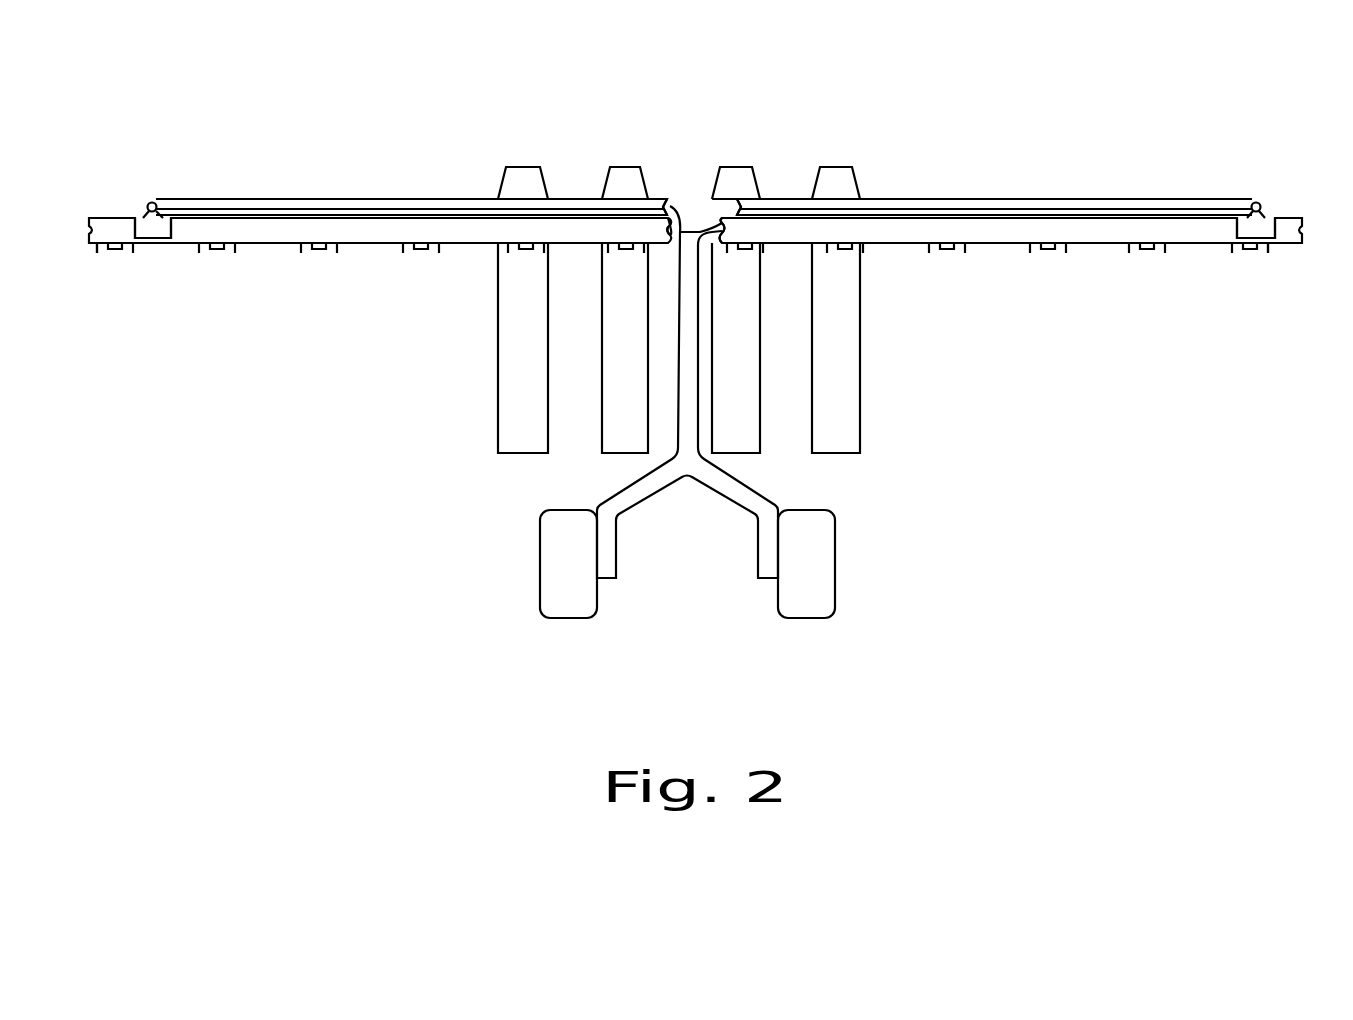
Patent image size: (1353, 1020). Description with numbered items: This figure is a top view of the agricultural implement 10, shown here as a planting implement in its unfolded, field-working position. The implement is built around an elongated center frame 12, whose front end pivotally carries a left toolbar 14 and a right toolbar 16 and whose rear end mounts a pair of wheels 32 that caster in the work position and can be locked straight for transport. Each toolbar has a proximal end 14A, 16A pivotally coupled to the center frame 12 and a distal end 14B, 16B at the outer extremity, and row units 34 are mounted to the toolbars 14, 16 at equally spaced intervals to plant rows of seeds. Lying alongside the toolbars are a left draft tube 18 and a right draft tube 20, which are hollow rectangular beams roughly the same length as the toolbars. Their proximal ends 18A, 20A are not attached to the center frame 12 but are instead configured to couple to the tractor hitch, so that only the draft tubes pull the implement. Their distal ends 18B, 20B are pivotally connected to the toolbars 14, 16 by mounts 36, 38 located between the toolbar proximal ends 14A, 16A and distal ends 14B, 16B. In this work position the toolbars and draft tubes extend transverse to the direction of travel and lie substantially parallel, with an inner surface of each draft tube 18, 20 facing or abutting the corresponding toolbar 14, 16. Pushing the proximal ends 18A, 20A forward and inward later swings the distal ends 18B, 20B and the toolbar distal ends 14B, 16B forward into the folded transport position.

The agricultural implement 10 is at (438, 472).
The center frame 12 is at (685, 403).
The left toolbar 14 is at (263, 235).
The proximal end of left toolbar 14A is at (658, 265).
The distal end of left toolbar 14B is at (105, 272).
The right toolbar 16 is at (1202, 236).
The proximal end of right toolbar 16A is at (735, 272).
The distal end of right toolbar 16B is at (1280, 271).
The left draft tube 18 is at (268, 203).
The proximal end of left draft tube 18A is at (660, 176).
The distal end of left draft tube 18B is at (147, 172).
The right draft tube 20 is at (1158, 203).
The proximal end of right draft tube 20A is at (744, 181).
The distal end of right draft tube 20B is at (1248, 173).
The wheels 32 is at (563, 612).
The row units 34 is at (848, 445).
The mount 36 is at (145, 222).
The mount 38 is at (1263, 225).